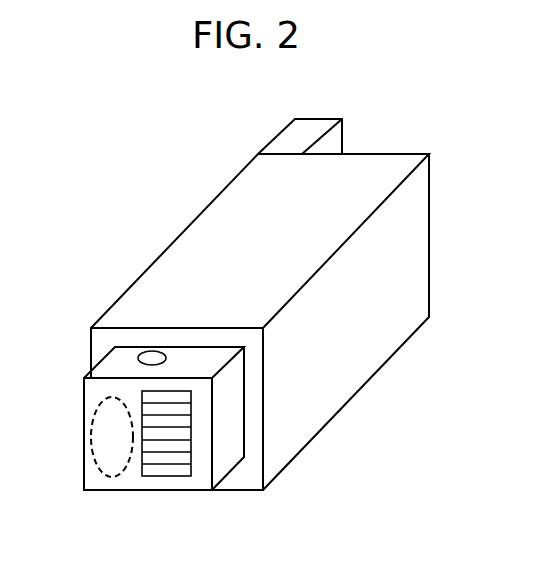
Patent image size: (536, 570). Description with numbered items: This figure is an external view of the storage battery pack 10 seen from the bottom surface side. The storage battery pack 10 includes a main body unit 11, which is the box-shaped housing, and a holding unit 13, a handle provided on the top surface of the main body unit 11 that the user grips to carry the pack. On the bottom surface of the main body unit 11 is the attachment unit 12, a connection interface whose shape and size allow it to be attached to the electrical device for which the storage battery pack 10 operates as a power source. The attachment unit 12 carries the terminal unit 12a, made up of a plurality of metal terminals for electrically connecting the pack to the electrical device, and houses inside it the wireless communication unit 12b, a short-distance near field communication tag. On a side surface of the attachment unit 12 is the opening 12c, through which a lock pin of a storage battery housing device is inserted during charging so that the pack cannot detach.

The storage battery pack 10 is at (445, 118).
The main body unit 11 is at (358, 365).
The attachment unit 12 is at (91, 391).
The terminal unit 12a is at (171, 476).
The wireless communication unit 12b is at (97, 467).
The opening 12c is at (148, 359).
The holding unit 13 is at (282, 136).